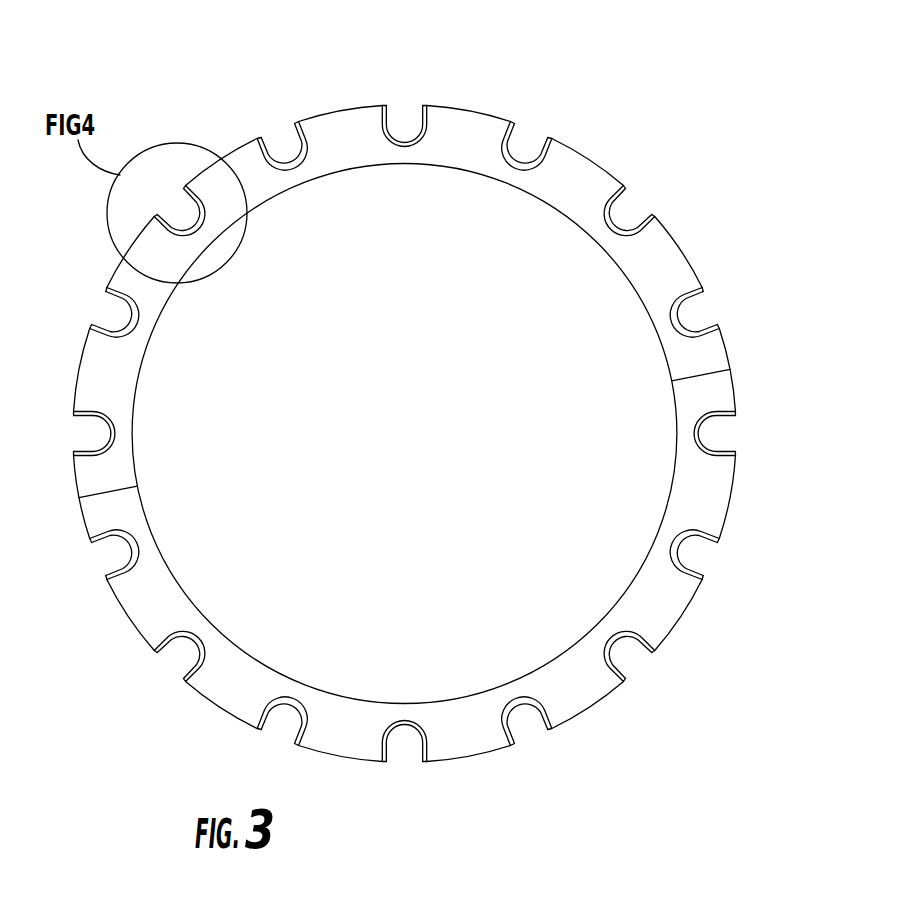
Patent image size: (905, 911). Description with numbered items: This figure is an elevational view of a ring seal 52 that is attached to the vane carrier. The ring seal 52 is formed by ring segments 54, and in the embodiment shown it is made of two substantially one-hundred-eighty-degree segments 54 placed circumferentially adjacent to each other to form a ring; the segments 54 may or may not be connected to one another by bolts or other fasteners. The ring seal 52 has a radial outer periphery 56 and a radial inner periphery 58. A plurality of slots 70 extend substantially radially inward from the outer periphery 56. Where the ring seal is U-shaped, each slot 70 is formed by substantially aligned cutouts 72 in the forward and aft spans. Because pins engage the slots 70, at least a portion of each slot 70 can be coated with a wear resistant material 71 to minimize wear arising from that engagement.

The ring seal 52 is at (453, 383).
The ring segment 54 is at (448, 406).
The radial outer periphery 56 is at (585, 153).
The radial inner periphery 58 is at (588, 233).
The slot 70 is at (452, 383).
The wear resistant material 71 is at (408, 110).
The cutout 72 is at (648, 184).